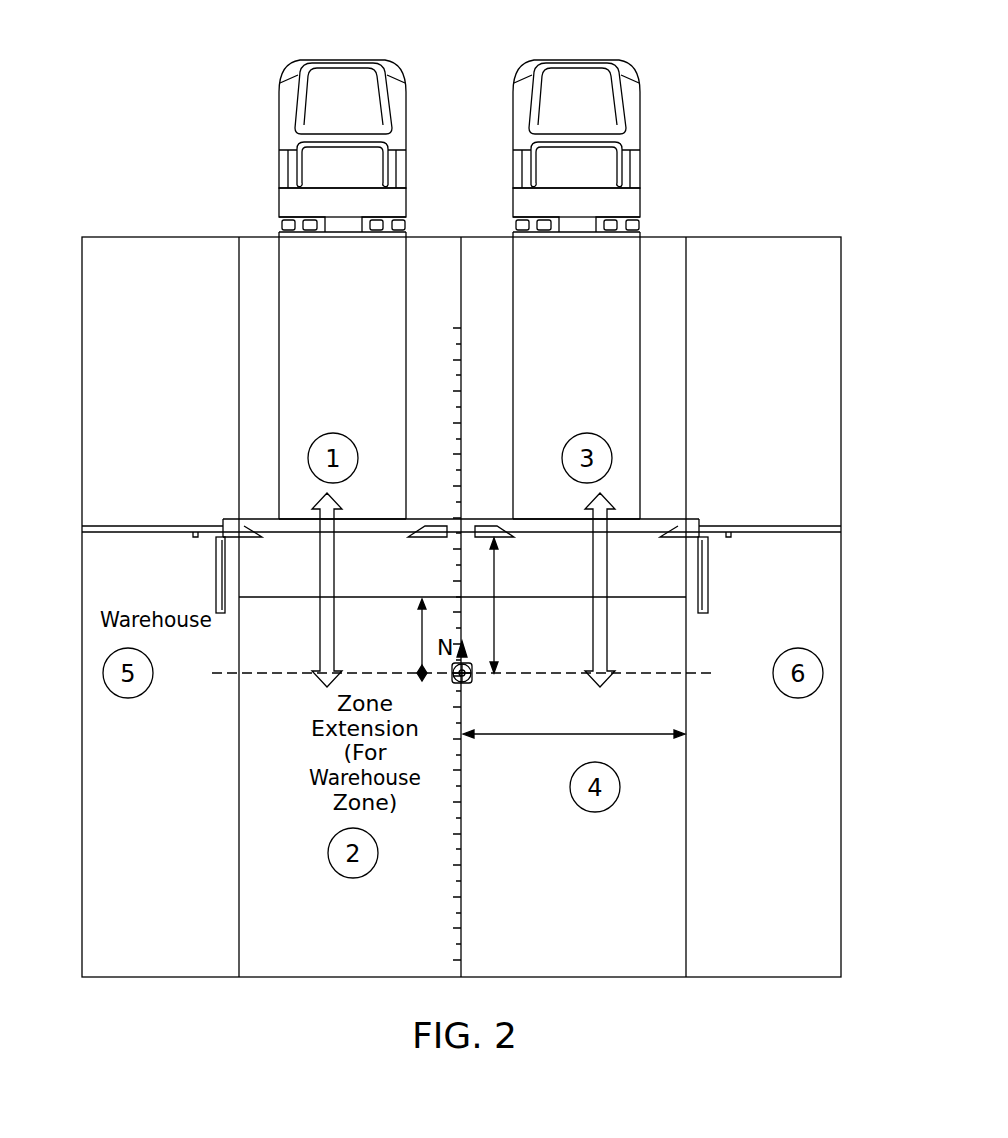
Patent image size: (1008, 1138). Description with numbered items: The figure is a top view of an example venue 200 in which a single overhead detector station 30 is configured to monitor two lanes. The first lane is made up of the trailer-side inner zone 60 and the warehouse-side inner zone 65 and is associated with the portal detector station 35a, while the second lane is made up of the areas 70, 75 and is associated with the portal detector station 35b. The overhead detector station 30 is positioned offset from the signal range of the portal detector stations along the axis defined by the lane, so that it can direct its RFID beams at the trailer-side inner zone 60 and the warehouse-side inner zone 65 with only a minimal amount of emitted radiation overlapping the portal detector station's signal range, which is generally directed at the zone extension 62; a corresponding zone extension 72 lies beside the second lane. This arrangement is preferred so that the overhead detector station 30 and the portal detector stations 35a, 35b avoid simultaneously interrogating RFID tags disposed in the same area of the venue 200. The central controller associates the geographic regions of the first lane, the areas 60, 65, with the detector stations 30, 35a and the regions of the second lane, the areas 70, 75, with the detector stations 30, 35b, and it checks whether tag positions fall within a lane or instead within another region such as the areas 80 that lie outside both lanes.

The venue 200 is at (459, 498).
The other region of the venue 80 is at (97, 391).
The trailer-side inner zone 60 is at (255, 468).
The warehouse-side inner zone 65 is at (255, 868).
The second lane area 70 is at (670, 473).
The second lane area 75 is at (672, 873).
The zone extension 62 is at (250, 673).
The zone extension 72 is at (672, 645).
The portal detector station 35a is at (216, 581).
The portal detector station 35b is at (709, 574).
The overhead detector station 30 is at (457, 688).